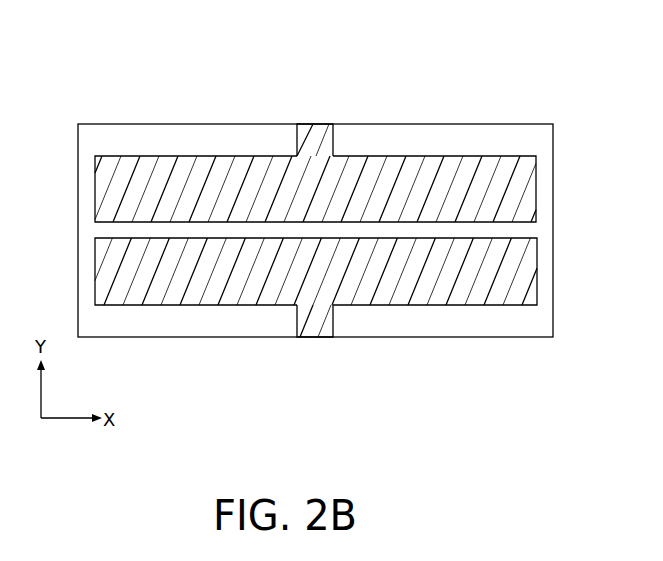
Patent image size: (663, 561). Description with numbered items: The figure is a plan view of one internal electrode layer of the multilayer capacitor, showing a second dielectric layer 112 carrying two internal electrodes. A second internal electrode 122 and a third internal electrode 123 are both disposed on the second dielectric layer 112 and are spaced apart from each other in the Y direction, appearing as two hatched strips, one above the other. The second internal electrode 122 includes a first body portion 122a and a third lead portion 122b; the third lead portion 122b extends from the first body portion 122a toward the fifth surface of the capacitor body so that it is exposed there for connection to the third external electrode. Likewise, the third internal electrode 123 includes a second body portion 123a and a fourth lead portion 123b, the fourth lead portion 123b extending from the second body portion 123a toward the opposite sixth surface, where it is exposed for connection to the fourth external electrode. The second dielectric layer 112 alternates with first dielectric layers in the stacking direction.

The second dielectric layer 112 is at (488, 137).
The third internal electrode 123 is at (315, 123).
The second body portion 123a is at (223, 193).
The fourth lead portion 123b is at (321, 114).
The second internal electrode 122 is at (316, 344).
The first body portion 122a is at (420, 275).
The third lead portion 122b is at (316, 354).